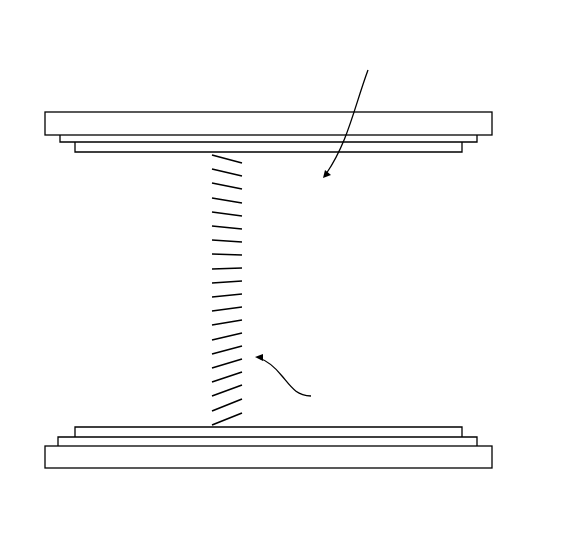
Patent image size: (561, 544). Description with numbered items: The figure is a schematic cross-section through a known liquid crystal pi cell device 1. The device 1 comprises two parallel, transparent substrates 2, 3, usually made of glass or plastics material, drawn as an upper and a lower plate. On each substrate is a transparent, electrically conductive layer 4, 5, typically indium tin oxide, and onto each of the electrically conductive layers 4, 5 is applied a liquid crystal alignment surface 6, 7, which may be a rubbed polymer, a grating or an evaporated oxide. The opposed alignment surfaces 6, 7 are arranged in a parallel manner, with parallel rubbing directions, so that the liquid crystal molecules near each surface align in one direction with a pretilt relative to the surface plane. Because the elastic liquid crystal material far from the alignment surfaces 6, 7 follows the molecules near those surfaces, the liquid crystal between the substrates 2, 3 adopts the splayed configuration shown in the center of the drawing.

The liquid crystal pi cell device 1 is at (102, 89).
The transparent substrate 2 is at (440, 110).
The transparent substrate 3 is at (418, 466).
The transparent electrically conductive layer 4 is at (63, 140).
The transparent electrically conductive layer 5 is at (64, 443).
The liquid crystal alignment surface 6 is at (132, 150).
The liquid crystal alignment surface 7 is at (131, 430).